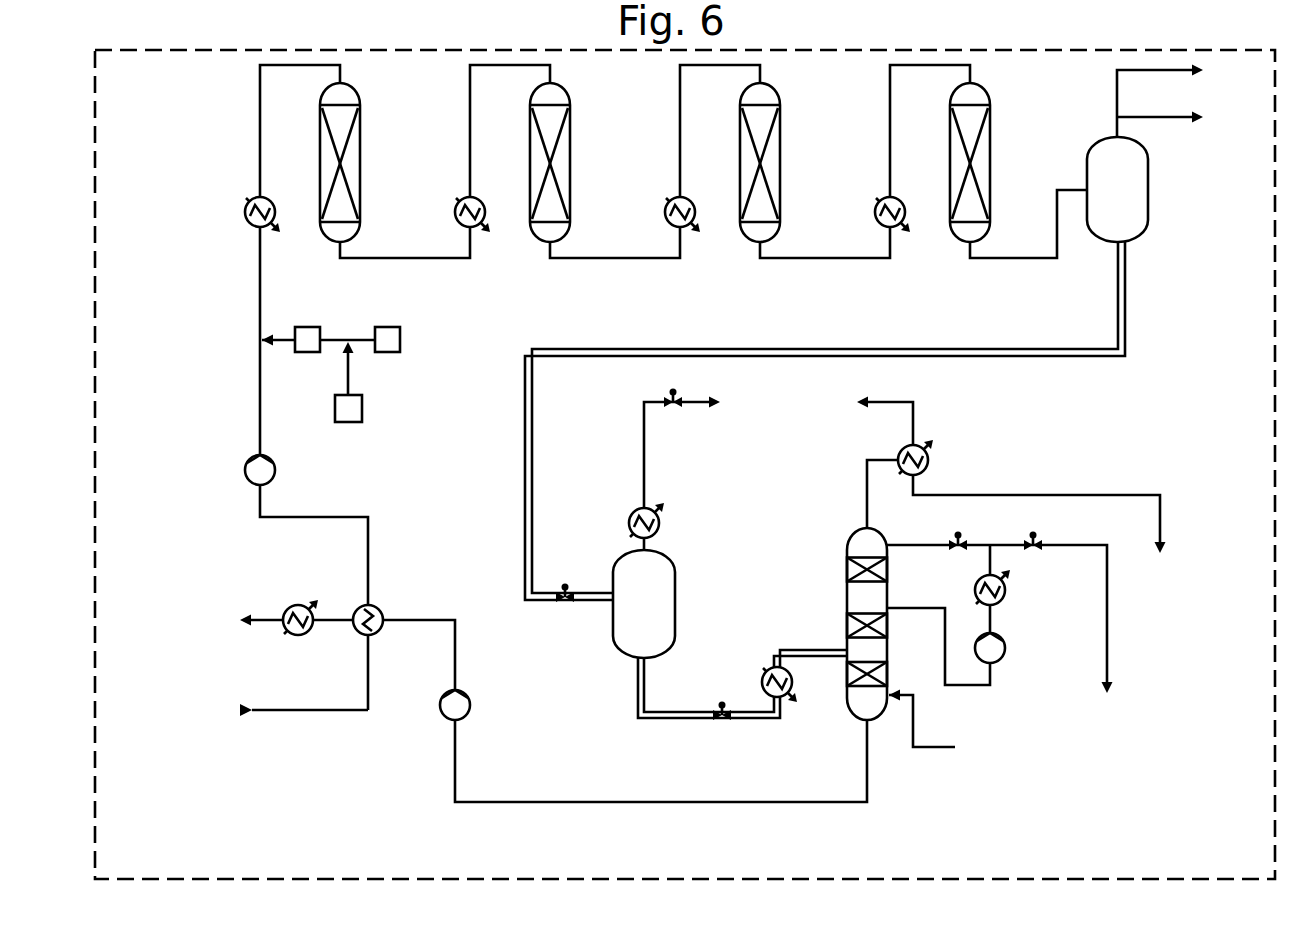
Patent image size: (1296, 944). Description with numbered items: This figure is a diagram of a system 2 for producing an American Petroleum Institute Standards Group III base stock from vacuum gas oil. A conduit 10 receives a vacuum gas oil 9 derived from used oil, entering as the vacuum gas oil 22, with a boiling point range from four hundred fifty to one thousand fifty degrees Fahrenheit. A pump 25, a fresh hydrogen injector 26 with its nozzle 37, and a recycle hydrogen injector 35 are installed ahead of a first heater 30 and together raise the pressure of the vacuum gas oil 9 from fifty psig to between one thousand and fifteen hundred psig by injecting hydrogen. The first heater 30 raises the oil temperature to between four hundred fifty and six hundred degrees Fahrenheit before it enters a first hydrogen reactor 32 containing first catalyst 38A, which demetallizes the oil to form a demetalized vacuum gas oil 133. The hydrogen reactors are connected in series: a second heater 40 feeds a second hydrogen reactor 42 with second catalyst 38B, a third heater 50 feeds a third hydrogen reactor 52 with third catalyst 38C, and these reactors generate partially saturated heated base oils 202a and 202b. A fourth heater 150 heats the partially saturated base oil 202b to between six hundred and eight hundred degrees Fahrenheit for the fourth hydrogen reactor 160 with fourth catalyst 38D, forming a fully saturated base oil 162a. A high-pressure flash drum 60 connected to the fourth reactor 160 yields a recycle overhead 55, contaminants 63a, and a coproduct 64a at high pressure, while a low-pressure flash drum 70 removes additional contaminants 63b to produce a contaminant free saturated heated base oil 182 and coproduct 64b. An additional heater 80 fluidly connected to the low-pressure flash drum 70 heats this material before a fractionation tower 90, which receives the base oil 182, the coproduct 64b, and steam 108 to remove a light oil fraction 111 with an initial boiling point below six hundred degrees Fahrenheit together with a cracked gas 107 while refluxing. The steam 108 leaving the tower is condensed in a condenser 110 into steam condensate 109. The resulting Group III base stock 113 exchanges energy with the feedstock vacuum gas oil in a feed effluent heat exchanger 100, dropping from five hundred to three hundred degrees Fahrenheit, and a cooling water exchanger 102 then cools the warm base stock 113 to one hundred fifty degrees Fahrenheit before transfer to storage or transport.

The system 2 is at (683, 881).
The vacuum gas oil 9 is at (258, 130).
The conduit 10 is at (258, 367).
The vacuum gas oil 22 is at (281, 709).
The pump 25 is at (245, 470).
The fresh hydrogen injector 26 is at (362, 412).
The first heater 30 is at (245, 212).
The first hydrogen reactor 32 is at (360, 140).
The recycle hydrogen injector 35 is at (395, 327).
The nozzle 37 is at (307, 327).
The first catalyst 38A is at (340, 163).
The second catalyst 38B is at (550, 163).
The third catalyst 38C is at (760, 163).
The fourth catalyst 38D is at (970, 163).
The second heater 40 is at (455, 212).
The second hydrogen reactor 42 is at (570, 140).
The third heater 50 is at (665, 214).
The third hydrogen reactor 52 is at (780, 140).
The recycle overhead 55 is at (1181, 96).
The high-pressure flash drum 60 is at (1148, 195).
The contaminants 63a is at (1188, 117).
The additional contaminants 63b is at (711, 449).
The coproduct 64a is at (760, 358).
The coproduct 64b is at (647, 718).
The low-pressure flash drum 70 is at (676, 607).
The additional heater 80 is at (760, 680).
The fractionation tower 90 is at (846, 604).
The feed effluent heat exchanger 100 is at (380, 608).
The cooling water exchanger 102 is at (297, 635).
The cracked gas 107 is at (859, 417).
The steam 108 is at (950, 726).
The steam condensate 109 is at (1050, 531).
The condenser 110 is at (928, 458).
The light oil fraction 111 is at (905, 603).
The American Petroleum Institute Standards Group III Base Stock 113 is at (675, 820).
The demetalized vacuum gas oil 133 is at (447, 258).
The fourth heater 150 is at (875, 214).
The fourth hydrogen reactor 160 is at (992, 128).
The fully saturated base oil 162a is at (1010, 258).
The contaminant free saturated heated base oil 182 is at (645, 712).
The partially saturated heated base oil 202a is at (617, 258).
The partially saturated heated base oil 202b is at (803, 258).